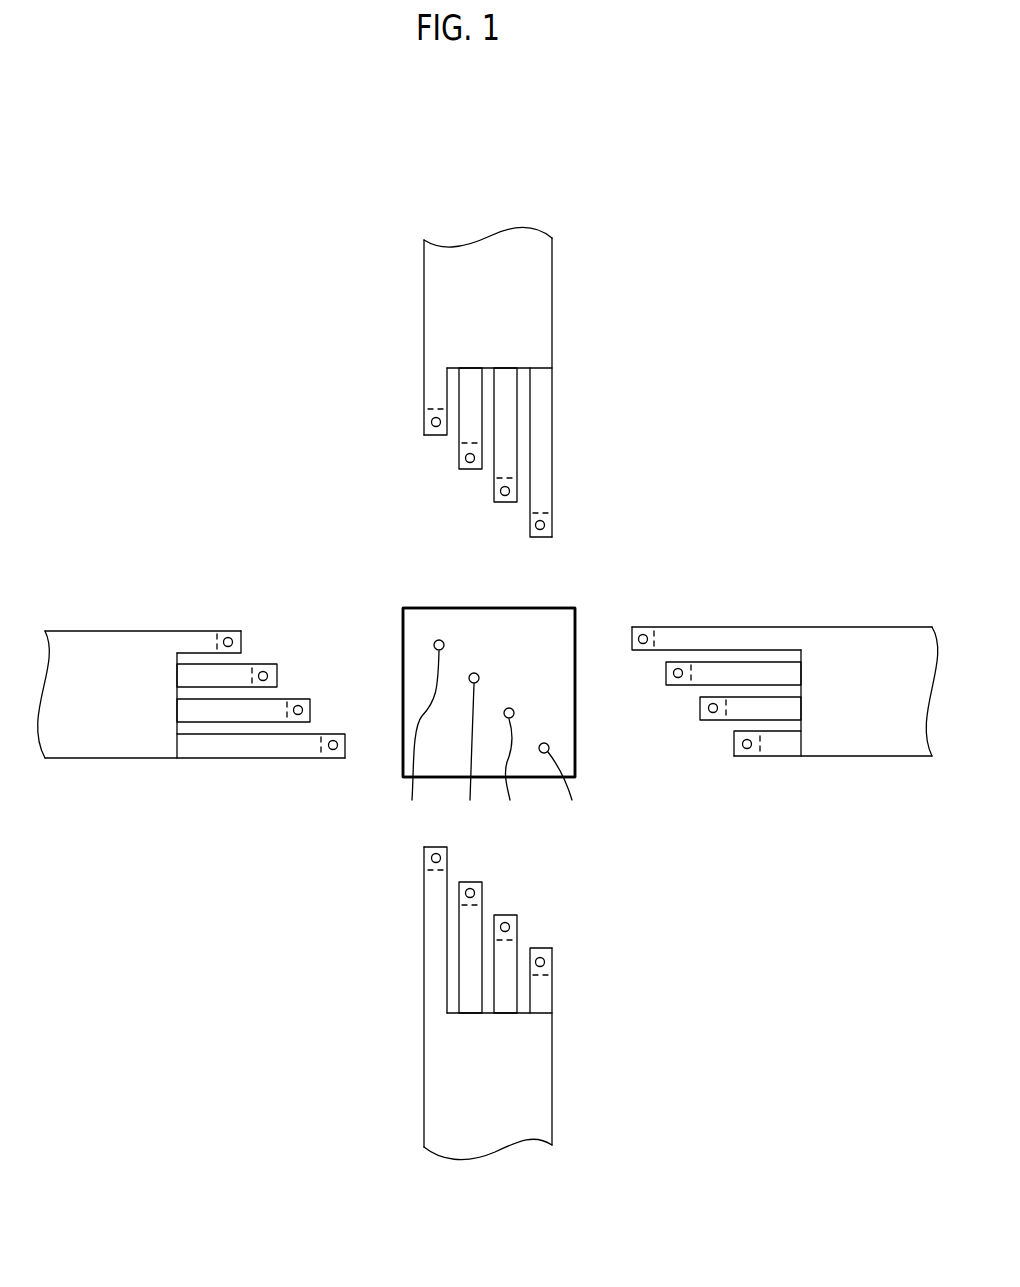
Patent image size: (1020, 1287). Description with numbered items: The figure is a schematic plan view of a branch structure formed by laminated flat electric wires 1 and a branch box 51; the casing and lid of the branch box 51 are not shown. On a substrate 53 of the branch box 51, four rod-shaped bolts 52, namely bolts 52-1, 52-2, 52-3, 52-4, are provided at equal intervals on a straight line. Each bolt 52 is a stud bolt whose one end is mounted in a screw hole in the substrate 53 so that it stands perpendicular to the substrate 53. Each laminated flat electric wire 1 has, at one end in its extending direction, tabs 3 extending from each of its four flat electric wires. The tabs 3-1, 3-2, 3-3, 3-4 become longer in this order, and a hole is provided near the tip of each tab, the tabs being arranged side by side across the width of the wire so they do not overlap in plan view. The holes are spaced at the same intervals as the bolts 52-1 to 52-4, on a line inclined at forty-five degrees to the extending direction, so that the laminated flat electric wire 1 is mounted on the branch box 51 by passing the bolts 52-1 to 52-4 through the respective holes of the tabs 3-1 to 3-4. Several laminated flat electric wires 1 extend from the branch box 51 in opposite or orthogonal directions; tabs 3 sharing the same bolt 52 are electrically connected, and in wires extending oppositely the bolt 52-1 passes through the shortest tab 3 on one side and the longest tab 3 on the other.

The laminated flat electric wire 1 is at (496, 302).
The tabs 3 is at (477, 488).
The tab 3-1 is at (436, 436).
The tab 3-2 is at (470, 470).
The tab 3-3 is at (505, 503).
The tab 3-4 is at (537, 488).
The branch box 51 is at (522, 690).
The bolts 52 is at (501, 826).
The bolt 52-1 is at (409, 826).
The bolt 52-2 is at (464, 843).
The bolt 52-3 is at (526, 860).
The bolt 52-4 is at (580, 878).
The substrate 53 is at (558, 628).